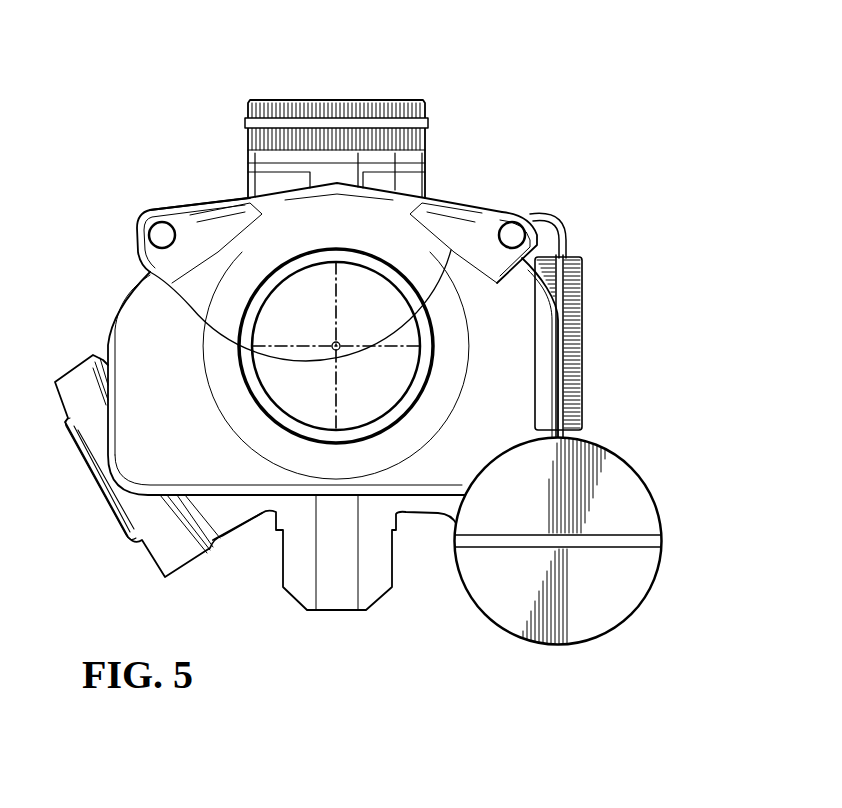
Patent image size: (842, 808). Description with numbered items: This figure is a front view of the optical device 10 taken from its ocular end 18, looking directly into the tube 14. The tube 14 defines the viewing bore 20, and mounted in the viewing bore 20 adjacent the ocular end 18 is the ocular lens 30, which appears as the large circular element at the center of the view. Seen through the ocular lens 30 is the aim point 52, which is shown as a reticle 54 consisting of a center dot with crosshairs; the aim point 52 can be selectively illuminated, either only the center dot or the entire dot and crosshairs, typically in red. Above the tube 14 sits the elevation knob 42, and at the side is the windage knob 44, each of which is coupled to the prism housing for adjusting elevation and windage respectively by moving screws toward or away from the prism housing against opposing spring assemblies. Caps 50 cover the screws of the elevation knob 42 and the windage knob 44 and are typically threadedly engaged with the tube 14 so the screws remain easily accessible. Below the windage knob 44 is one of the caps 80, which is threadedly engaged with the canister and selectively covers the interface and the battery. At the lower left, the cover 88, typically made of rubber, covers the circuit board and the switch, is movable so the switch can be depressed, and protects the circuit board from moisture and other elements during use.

The optical device 10 is at (582, 210).
The tube 14 is at (188, 200).
The ocular end 18 is at (170, 331).
The viewing bore 20 is at (383, 302).
The ocular lens 30 is at (292, 292).
The elevation knob 42 is at (352, 86).
The windage knob 44 is at (600, 292).
The caps 50 is at (418, 137).
The aim point 52 is at (336, 346).
The reticle 54 is at (357, 380).
The caps 80 is at (628, 500).
The cover 88 is at (122, 530).